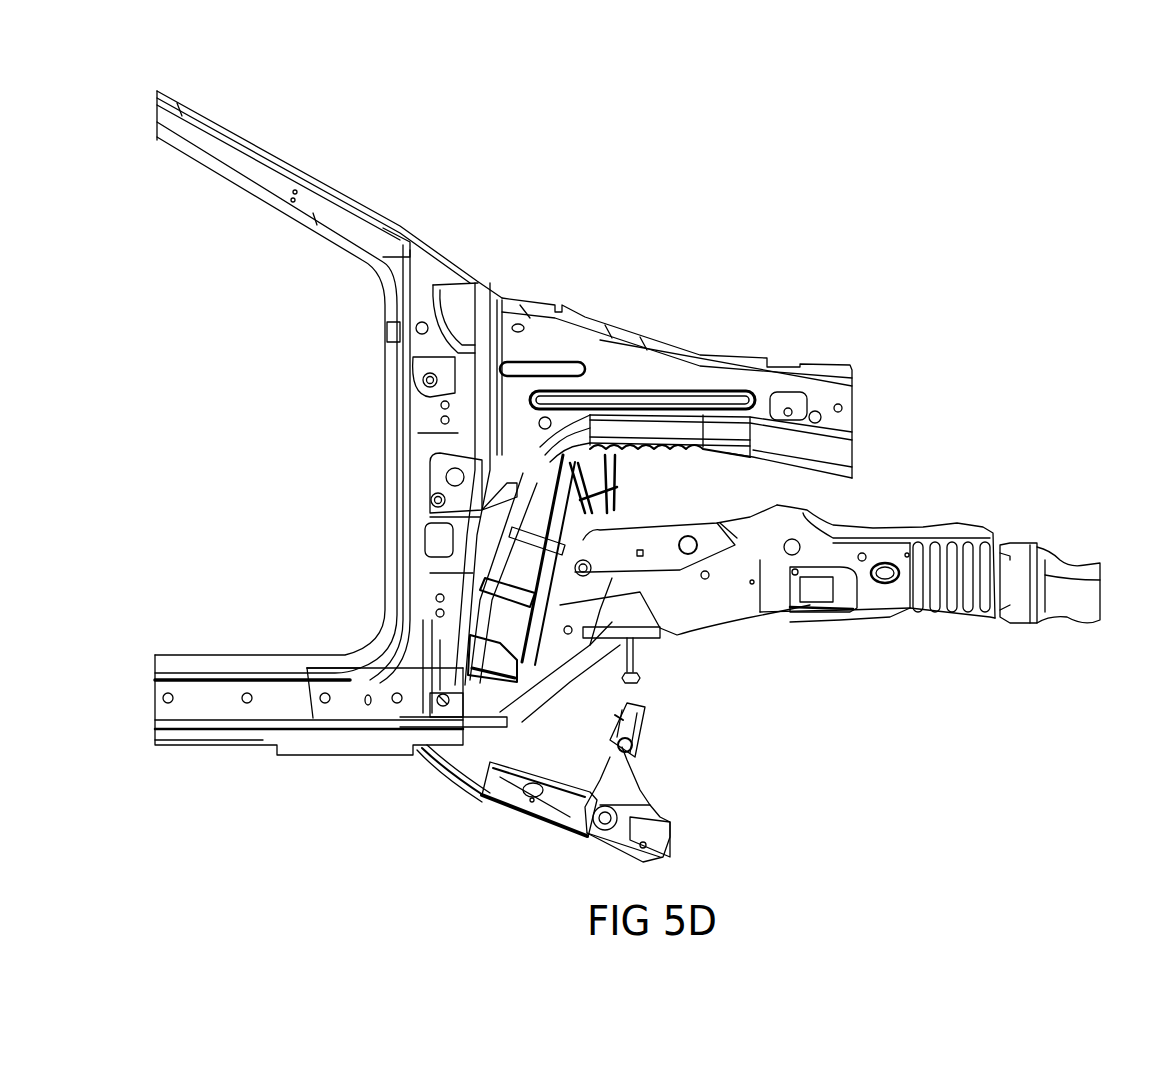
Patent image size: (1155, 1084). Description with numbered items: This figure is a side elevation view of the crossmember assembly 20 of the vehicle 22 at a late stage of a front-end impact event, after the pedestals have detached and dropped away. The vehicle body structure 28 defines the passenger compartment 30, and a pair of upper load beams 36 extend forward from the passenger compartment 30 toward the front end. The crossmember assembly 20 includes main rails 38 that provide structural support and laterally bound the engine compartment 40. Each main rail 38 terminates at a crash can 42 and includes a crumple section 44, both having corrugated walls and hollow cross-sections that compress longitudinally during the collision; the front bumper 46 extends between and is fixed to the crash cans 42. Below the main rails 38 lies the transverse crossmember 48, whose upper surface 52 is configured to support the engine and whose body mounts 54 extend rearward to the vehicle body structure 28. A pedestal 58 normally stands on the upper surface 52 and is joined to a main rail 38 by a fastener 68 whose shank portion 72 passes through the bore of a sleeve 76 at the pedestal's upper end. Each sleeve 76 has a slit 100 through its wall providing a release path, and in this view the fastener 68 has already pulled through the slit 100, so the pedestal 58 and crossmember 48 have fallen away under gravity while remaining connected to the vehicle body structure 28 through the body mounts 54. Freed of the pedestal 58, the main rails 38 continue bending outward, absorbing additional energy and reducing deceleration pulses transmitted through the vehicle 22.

The crossmember assembly 20 is at (338, 845).
The vehicle 22 is at (832, 202).
The vehicle body structure 28 is at (203, 145).
The passenger compartment 30 is at (250, 464).
The upper load beam 36 is at (693, 347).
The main rail 38 is at (923, 520).
The engine compartment 40 is at (727, 501).
The crash can 42 is at (1017, 563).
The crumple section 44 is at (990, 633).
The front bumper 46 is at (1073, 573).
The crossmember 48 is at (537, 842).
The upper surface 52 is at (527, 767).
The body mount 54 is at (417, 753).
The pedestal 58 is at (633, 773).
The fastener 68 is at (640, 679).
The shank portion 72 is at (633, 658).
The sleeve 76 is at (648, 712).
The slit 100 is at (618, 718).